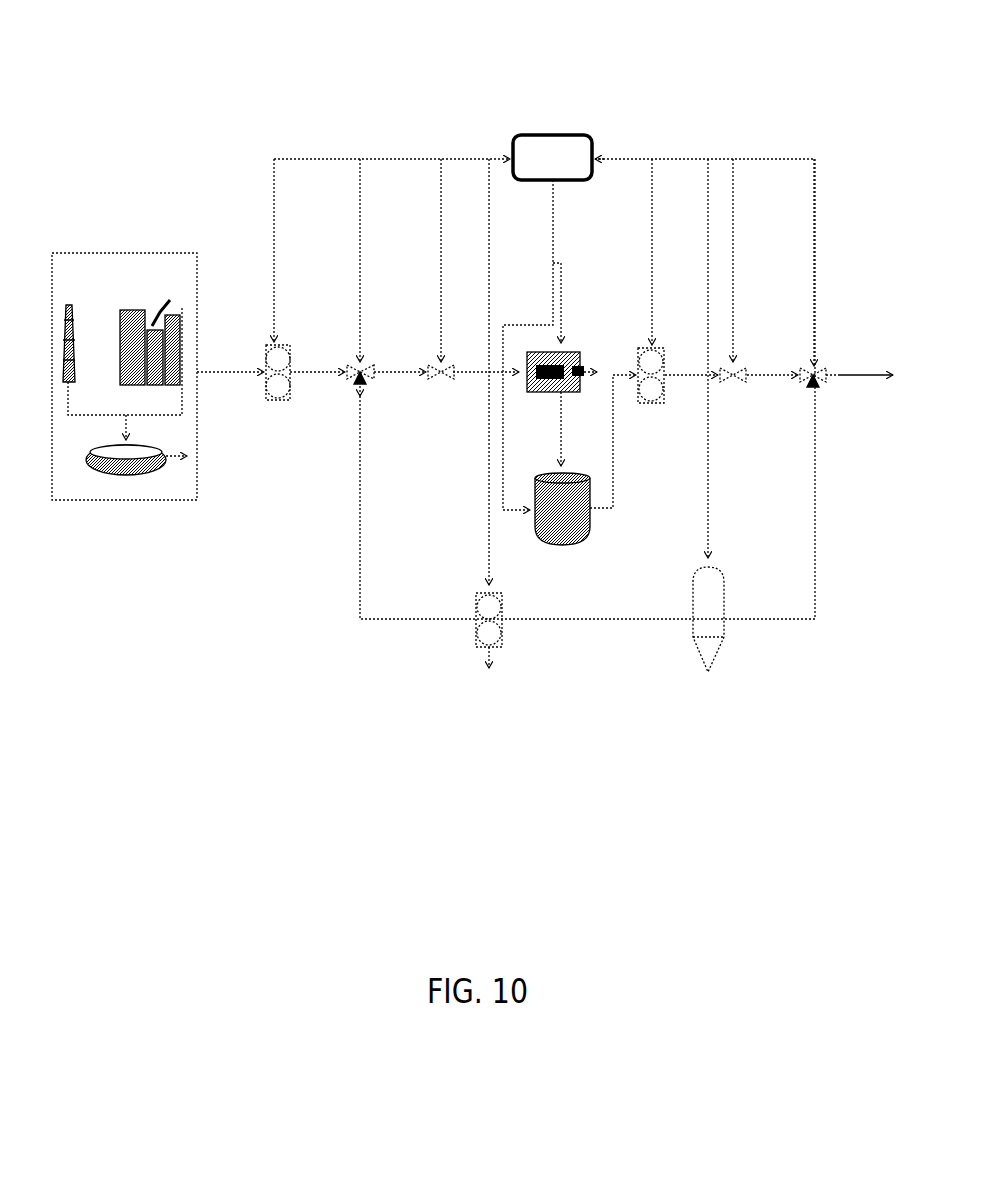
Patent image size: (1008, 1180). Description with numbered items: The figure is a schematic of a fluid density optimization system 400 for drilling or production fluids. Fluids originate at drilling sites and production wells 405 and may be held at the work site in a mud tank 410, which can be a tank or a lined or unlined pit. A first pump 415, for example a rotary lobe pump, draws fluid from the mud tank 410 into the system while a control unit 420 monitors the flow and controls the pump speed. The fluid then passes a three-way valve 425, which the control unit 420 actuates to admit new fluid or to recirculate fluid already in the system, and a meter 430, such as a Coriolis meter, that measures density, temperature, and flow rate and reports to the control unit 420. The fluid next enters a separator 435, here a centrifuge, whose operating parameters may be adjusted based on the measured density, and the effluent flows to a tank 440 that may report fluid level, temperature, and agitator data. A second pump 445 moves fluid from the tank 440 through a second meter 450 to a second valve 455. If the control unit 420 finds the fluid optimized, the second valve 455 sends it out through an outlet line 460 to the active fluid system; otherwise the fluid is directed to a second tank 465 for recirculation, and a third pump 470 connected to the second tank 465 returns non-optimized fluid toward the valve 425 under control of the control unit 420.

The fluid density optimization system 400 is at (224, 39).
The drilling sites and production wells 405 is at (106, 248).
The mud tank 410 is at (120, 490).
The first pump 415 is at (258, 331).
The control unit 420 is at (552, 157).
The valve 425 is at (337, 390).
The meter 430 is at (440, 386).
The separator 435 is at (585, 342).
The tank 440 is at (591, 551).
The second pump 445 is at (652, 411).
The second meter 450 is at (736, 397).
The second valve 455 is at (826, 391).
The outlet line 460 is at (861, 368).
The second tank 465 is at (737, 650).
The third pump 470 is at (516, 650).